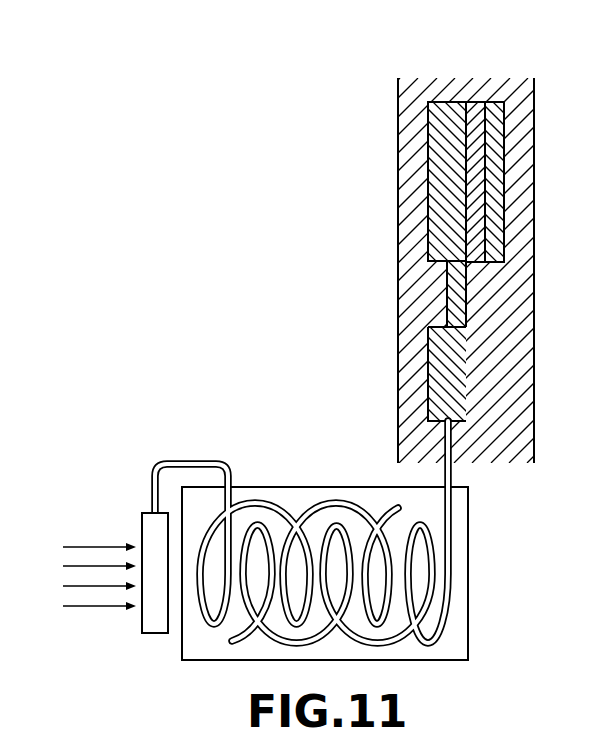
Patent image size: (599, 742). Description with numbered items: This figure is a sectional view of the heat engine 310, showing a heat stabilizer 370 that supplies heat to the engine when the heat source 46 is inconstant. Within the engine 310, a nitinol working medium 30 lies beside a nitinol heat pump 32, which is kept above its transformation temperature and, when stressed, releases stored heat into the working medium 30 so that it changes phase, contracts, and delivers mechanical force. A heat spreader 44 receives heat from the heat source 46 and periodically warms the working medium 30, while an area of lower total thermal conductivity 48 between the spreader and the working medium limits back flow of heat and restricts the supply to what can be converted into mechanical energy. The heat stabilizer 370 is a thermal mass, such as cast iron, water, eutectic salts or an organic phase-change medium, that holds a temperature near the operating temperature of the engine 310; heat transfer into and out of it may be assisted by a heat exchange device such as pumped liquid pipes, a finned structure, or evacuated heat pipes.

The engine 310 is at (383, 96).
The working medium 30 is at (470, 103).
The heat pump 32 is at (494, 103).
The heat spreader 44 is at (450, 149).
The area of lower total thermal conductivity 48 is at (455, 298).
The heat stabilizer 370 is at (469, 570).
The heat source 46 is at (100, 602).